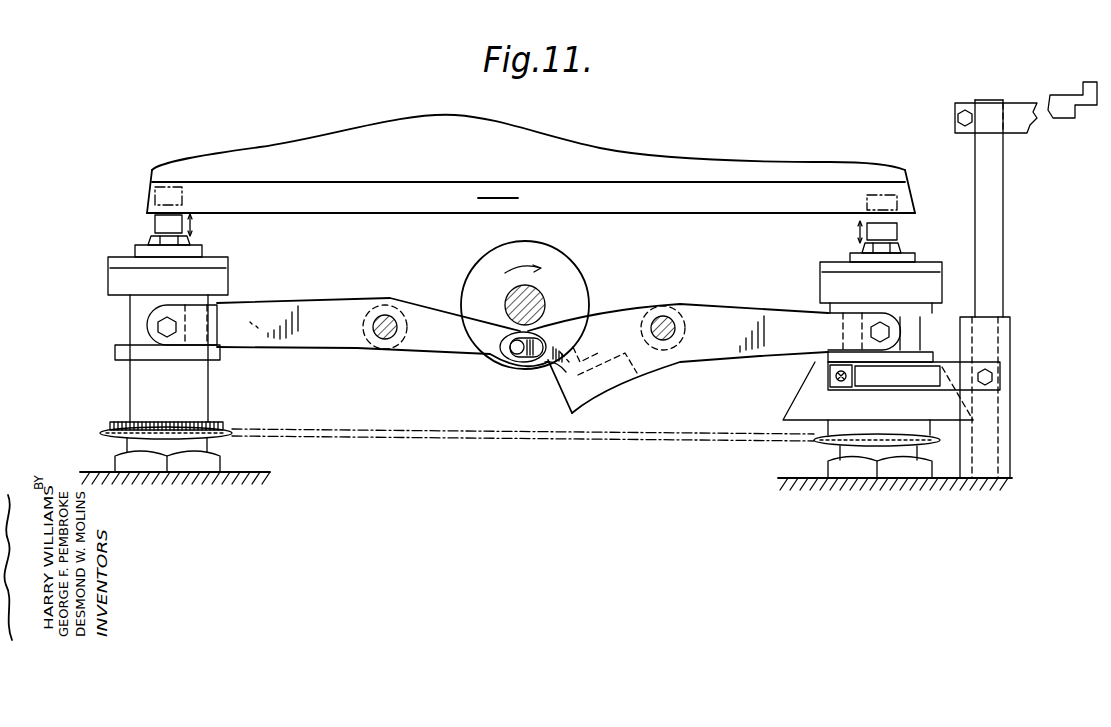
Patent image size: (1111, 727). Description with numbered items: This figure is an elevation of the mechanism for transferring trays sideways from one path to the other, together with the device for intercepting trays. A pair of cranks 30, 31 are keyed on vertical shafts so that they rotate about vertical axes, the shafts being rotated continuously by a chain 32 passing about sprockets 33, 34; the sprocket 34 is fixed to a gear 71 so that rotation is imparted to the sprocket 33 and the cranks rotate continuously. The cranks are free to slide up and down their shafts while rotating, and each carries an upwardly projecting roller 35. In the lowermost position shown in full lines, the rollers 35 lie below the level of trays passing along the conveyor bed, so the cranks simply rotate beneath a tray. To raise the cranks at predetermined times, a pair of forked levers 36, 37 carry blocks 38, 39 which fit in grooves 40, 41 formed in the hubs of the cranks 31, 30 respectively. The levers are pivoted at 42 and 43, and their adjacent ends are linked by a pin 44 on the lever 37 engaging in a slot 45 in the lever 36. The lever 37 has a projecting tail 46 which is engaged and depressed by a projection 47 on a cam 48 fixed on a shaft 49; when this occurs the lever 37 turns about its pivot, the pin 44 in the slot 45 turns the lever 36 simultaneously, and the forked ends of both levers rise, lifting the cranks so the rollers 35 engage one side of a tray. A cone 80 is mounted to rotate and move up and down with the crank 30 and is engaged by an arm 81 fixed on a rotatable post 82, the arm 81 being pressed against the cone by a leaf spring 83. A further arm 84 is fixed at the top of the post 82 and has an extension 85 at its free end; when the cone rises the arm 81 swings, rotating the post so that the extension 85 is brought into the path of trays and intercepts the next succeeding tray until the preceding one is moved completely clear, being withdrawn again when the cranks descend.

The crank 30 is at (853, 255).
The crank 31 is at (213, 258).
The chain 32 is at (703, 437).
The sprocket 33 is at (830, 447).
The sprocket 34 is at (213, 439).
The roller 35 is at (158, 224).
The forked lever 36 is at (422, 317).
The forked lever 37 is at (730, 312).
The block 38 is at (152, 340).
The block 39 is at (925, 318).
The groove 40 is at (129, 322).
The groove 41 is at (912, 342).
The pivot 42 is at (384, 320).
The pivot 43 is at (663, 320).
The pin 44 is at (516, 348).
The slot 45 is at (538, 340).
The tail 46 is at (557, 373).
The projection 47 is at (588, 344).
The cam 48 is at (570, 266).
The shaft 49 is at (540, 297).
The gear 71 is at (208, 424).
The cone 80 is at (812, 380).
The arm 81 is at (847, 384).
The post 82 is at (992, 234).
The leaf spring 83 is at (933, 376).
The arm 84 is at (1013, 110).
The extension 85 is at (1087, 81).